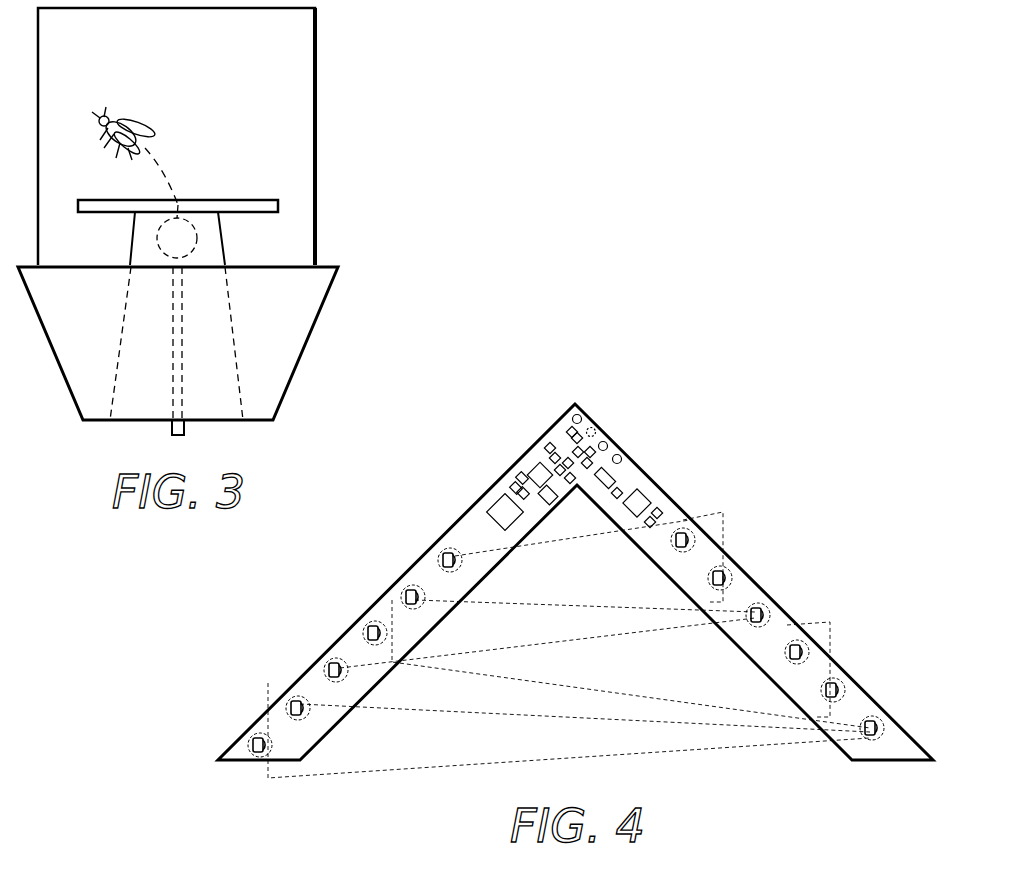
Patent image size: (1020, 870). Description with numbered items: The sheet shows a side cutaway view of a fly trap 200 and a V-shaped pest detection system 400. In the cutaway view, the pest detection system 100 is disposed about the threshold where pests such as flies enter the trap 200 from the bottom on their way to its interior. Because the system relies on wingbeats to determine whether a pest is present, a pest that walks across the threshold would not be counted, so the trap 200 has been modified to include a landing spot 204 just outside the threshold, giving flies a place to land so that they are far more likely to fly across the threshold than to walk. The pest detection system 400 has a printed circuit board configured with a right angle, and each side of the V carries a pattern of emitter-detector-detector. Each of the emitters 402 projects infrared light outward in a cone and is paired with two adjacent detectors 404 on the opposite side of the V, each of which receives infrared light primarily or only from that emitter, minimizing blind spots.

In FIG. 3, the trap 200 is at (362, 44).
In FIG. 3, the pest detection system 100 is at (265, 193).
In FIG. 3, the landing spot 204 is at (198, 252).
In FIG. 4, the pest detection system 400 is at (614, 426).
In FIG. 4, the emitters 402 is at (450, 553).
In FIG. 4, the detectors 404 is at (413, 590).